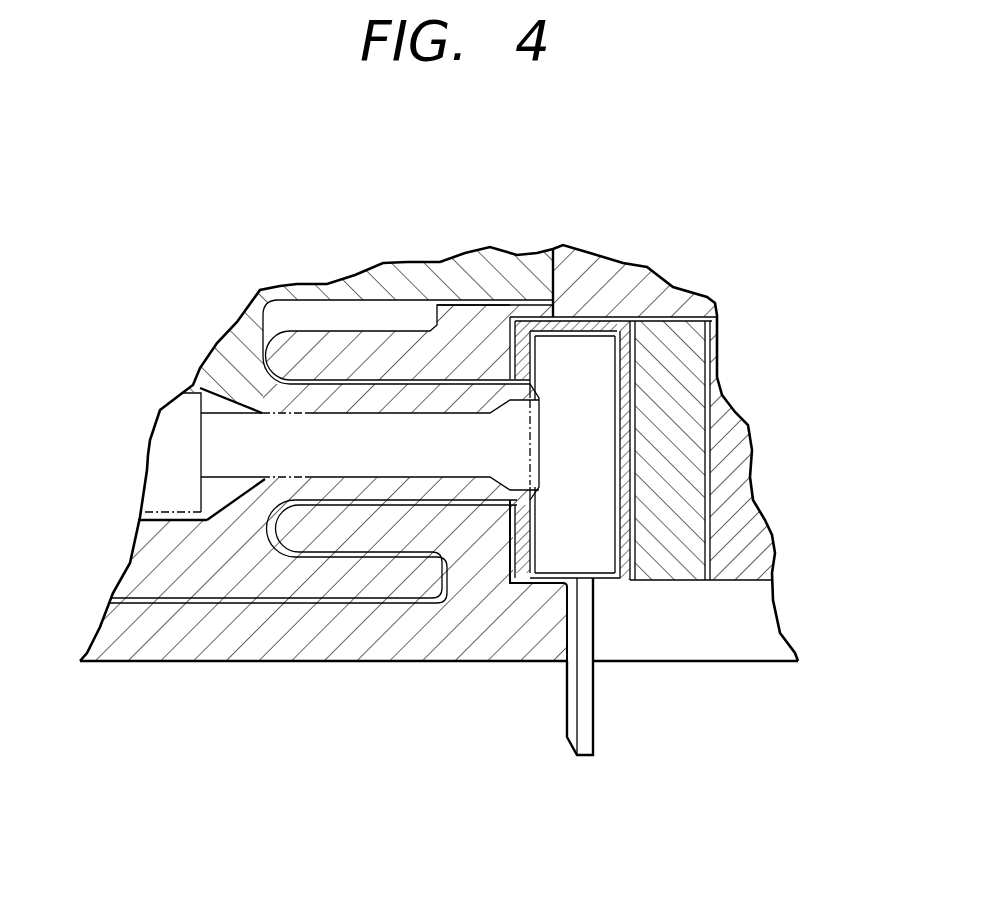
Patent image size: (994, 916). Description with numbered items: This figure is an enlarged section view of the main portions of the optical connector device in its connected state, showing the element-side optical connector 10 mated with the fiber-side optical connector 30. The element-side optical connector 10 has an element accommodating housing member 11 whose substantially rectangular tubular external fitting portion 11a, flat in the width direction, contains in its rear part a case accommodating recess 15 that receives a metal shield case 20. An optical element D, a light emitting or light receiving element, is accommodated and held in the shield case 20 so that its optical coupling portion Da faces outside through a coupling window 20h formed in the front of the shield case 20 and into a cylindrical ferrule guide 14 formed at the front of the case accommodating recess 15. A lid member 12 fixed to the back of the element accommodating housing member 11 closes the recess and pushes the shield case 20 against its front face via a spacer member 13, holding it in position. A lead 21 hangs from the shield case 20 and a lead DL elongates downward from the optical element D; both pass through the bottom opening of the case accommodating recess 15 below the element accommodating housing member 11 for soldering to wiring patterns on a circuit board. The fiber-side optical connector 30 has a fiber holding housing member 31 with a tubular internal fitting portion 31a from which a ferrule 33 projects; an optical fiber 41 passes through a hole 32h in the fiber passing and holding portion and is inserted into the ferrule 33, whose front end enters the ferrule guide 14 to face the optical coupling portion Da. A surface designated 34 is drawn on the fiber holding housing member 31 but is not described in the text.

The element-side optical connector 10 is at (682, 214).
The element accommodating housing member 11 is at (745, 663).
The tubular external fitting portion 11a is at (213, 663).
The lid member 12 is at (753, 513).
The spacer member 13 is at (685, 388).
The ferrule guide 14 is at (336, 333).
The case accommodating recess 15 is at (717, 334).
The shield case 20 is at (623, 330).
The coupling window 20h is at (533, 407).
The lead 21 is at (567, 680).
The fiber-side optical connector 30 is at (256, 277).
The fiber holding housing member 31 is at (133, 565).
The tubular internal fitting portion 31a is at (321, 590).
The hole 32h is at (180, 496).
The ferrule 33 is at (390, 397).
The bottom surface of lower arm 34 is at (165, 605).
The optical fiber 41 is at (263, 430).
The optical element D is at (600, 558).
The lead DL is at (595, 720).
The optical coupling portion Da is at (530, 440).